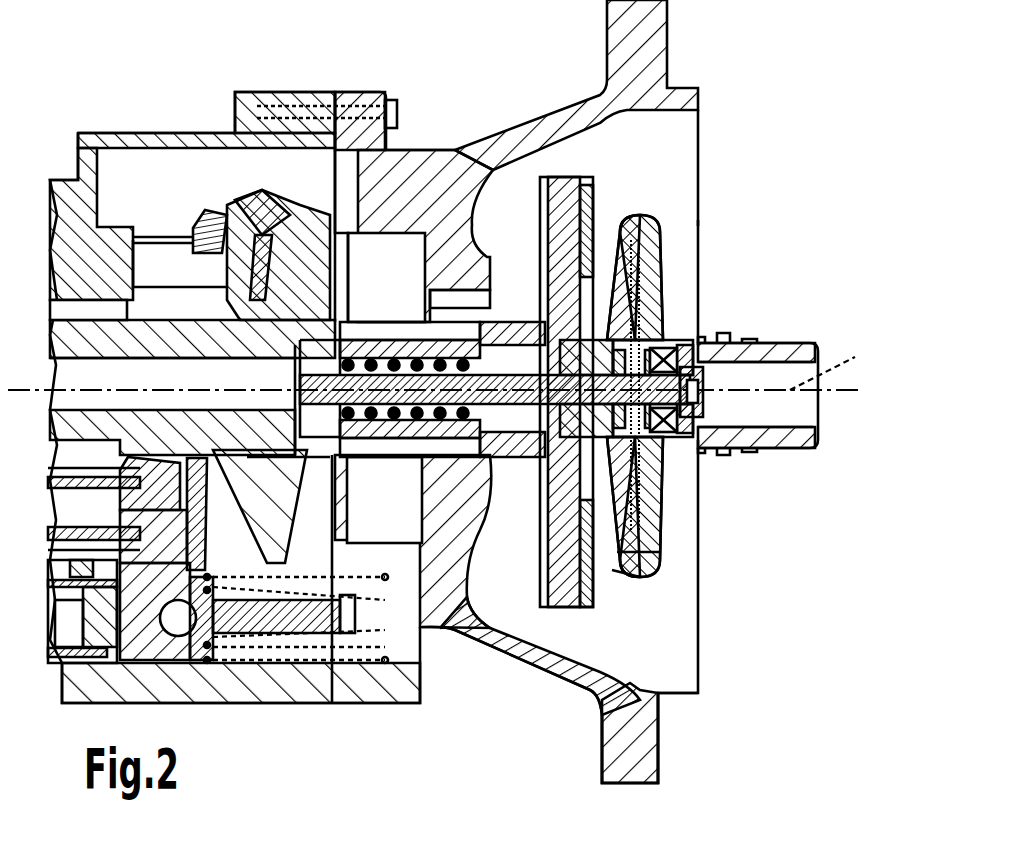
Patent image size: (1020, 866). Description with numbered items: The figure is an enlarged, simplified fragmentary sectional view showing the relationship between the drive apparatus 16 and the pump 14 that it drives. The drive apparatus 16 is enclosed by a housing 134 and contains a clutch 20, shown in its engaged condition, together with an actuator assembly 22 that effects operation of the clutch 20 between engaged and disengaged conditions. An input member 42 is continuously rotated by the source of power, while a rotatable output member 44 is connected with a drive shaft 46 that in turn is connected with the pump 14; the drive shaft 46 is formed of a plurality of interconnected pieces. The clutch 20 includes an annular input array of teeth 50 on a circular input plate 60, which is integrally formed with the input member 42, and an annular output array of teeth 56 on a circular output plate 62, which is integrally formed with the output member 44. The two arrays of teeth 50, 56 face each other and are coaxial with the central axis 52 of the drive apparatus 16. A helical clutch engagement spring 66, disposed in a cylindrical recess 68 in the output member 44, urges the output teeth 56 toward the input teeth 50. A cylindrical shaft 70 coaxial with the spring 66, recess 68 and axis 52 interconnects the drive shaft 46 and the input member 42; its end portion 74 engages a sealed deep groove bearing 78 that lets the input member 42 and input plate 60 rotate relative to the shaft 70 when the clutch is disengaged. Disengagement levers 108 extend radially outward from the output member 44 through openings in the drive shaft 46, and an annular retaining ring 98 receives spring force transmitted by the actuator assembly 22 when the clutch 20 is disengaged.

The pump 14 is at (132, 205).
The drive apparatus 16 is at (680, 216).
The clutch 20 is at (652, 200).
The actuator assembly 22 is at (528, 160).
The input member 42 is at (793, 343).
The output member 44 is at (513, 337).
The drive shaft 46 is at (175, 335).
The annular input array of teeth 50 is at (617, 552).
The central axis 52 is at (837, 365).
The annular output array of teeth 56 is at (612, 570).
The input plate 60 is at (653, 310).
The output plate 62 is at (615, 265).
The clutch engagement spring 66 is at (400, 358).
The cylindrical recess 68 is at (403, 420).
The shaft 70 is at (508, 457).
The end portion 74 is at (700, 418).
The bearing 78 is at (660, 443).
The retaining ring 98 is at (572, 175).
The disengagement levers 108 is at (565, 275).
The housing 134 is at (635, 747).